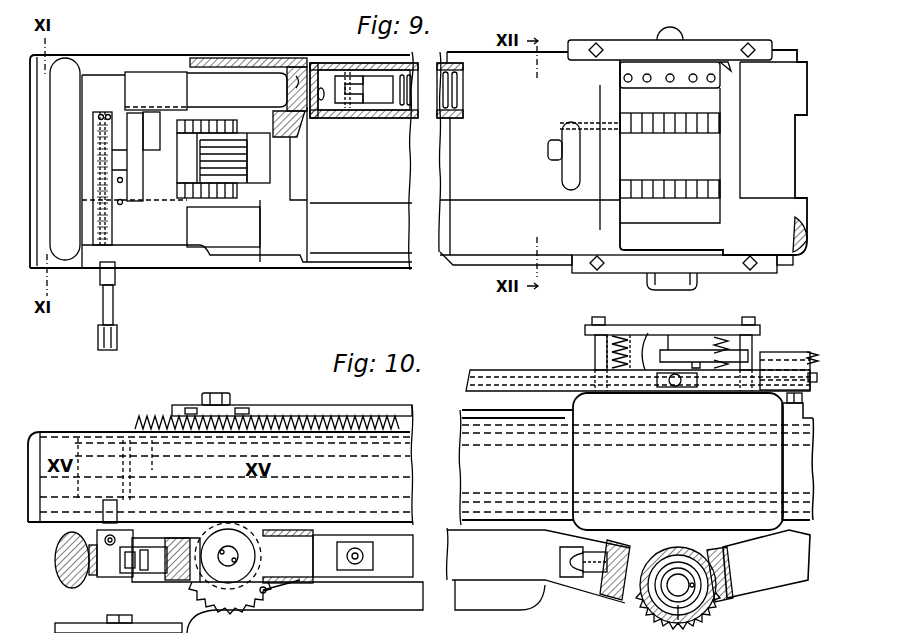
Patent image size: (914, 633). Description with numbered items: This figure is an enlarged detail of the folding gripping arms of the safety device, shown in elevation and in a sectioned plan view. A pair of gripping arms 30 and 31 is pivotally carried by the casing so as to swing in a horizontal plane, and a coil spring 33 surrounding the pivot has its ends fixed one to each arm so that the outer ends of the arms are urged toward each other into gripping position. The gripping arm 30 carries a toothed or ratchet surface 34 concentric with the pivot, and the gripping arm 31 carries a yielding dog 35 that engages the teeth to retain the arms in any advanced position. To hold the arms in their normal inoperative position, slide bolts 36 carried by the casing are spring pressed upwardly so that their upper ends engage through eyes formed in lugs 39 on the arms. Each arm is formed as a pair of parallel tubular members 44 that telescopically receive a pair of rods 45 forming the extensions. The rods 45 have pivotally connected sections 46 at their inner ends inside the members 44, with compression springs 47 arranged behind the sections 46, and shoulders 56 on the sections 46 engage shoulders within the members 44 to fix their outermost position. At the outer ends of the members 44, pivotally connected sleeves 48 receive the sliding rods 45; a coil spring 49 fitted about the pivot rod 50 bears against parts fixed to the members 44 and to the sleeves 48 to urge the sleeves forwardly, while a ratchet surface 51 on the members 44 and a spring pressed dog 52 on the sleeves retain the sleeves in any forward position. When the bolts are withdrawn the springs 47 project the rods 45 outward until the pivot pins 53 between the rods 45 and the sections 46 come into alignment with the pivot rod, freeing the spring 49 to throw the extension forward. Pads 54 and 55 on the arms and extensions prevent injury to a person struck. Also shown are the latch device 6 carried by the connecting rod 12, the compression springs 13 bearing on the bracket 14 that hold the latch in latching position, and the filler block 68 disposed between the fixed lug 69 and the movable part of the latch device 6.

In FIG. 10, the latch device 6 is at (648, 333).
In FIG. 10, the connecting rod 12 is at (530, 378).
In FIG. 10, the compression springs 13 is at (625, 335).
In FIG. 10, the bracket 14 is at (707, 328).
In FIG. 9, the gripping arm 30 is at (773, 212).
In FIG. 10, the gripping arm 30 is at (766, 564).
In FIG. 9, the gripping arm 31 is at (465, 240).
In FIG. 10, the gripping arm 31 is at (487, 568).
In FIG. 10, the coil spring 33 is at (717, 607).
In FIG. 10, the toothed or ratchet surface 34 is at (640, 618).
In FIG. 10, the yielding dog 35 is at (597, 572).
In FIG. 9, the slide bolts 36 is at (113, 278).
In FIG. 10, the lugs 39 is at (58, 535).
In FIG. 9, the tubular members 44 is at (330, 72).
In FIG. 9, the rods 45 is at (103, 90).
In FIG. 9, the pivotally connected sections 46 is at (380, 95).
In FIG. 9, the compression springs 47 is at (443, 72).
In FIG. 9, the pivotally connected sleeves 48 is at (163, 90).
In FIG. 9, the coil spring 49 is at (240, 157).
In FIG. 9, the pivot rod 50 is at (230, 165).
In FIG. 9, the ratchet surface 51 is at (220, 203).
In FIG. 9, the spring pressed dog 52 is at (150, 125).
In FIG. 9, the pivot pins 53 is at (345, 72).
In FIG. 10, the pad 54 is at (503, 597).
In FIG. 10, the pad 55 is at (72, 585).
In FIG. 9, the shoulders 56 is at (400, 112).
In FIG. 10, the filler block 68 is at (696, 352).
In FIG. 10, the fixed lug 69 is at (672, 338).